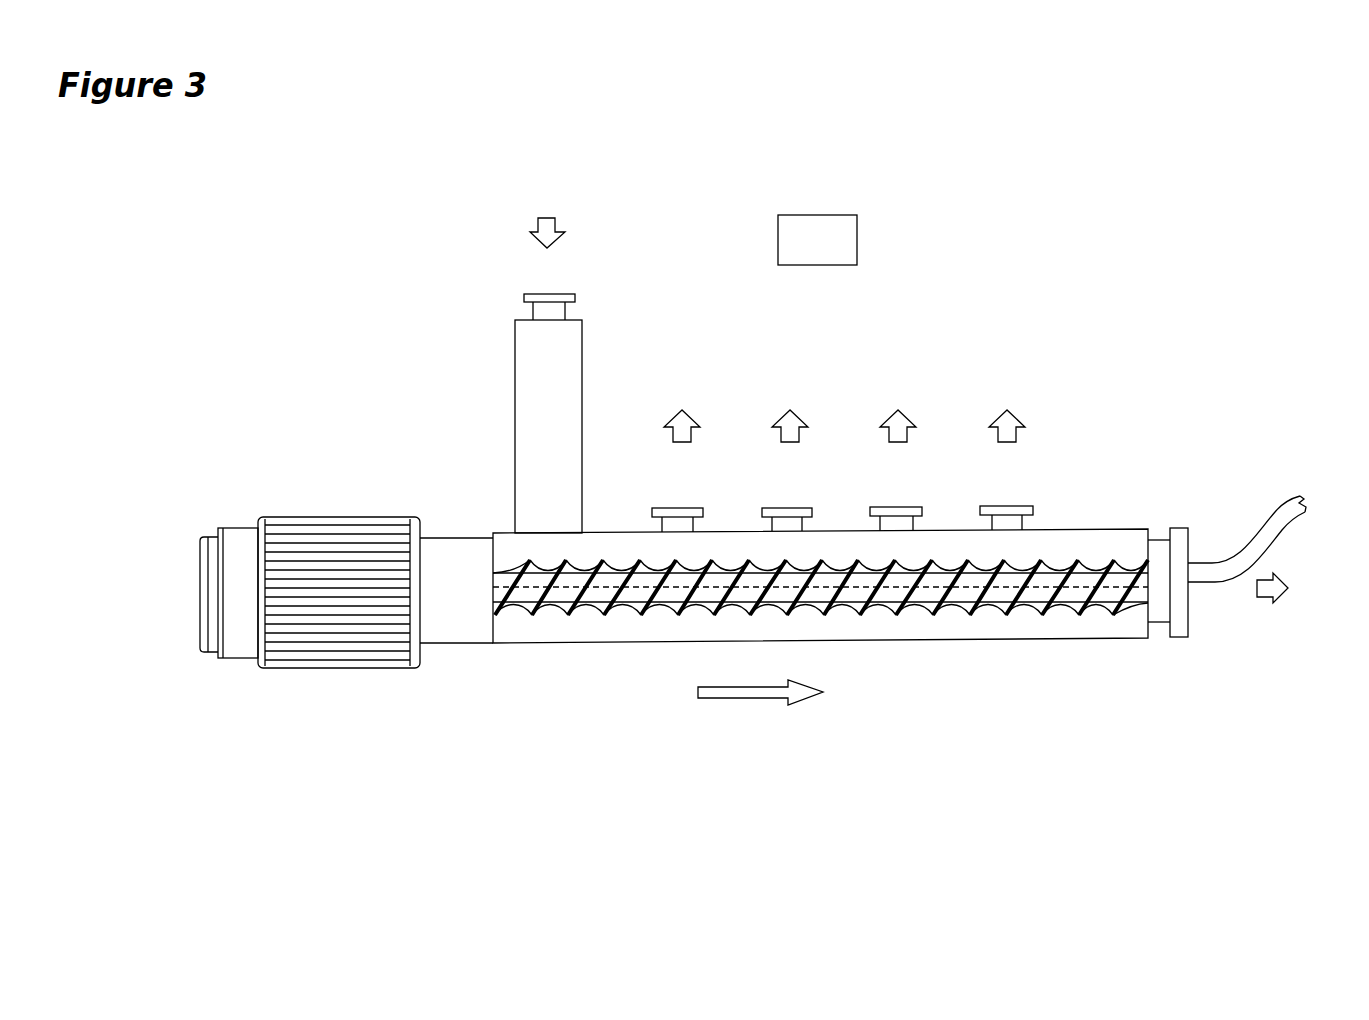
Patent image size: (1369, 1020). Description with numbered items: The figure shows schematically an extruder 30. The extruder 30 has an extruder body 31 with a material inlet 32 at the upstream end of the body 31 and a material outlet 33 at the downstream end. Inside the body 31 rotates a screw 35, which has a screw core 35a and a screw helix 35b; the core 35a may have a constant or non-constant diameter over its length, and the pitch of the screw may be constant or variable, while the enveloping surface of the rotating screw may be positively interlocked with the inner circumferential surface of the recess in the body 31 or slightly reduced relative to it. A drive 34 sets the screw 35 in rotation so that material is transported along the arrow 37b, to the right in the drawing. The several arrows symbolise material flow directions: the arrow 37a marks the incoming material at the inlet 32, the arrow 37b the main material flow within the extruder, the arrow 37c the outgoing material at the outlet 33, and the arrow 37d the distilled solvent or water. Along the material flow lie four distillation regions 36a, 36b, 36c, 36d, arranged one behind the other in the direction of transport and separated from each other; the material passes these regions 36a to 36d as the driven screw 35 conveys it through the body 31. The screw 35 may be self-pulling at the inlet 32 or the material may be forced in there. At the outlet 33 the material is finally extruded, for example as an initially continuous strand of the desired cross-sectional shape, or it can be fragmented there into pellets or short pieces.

The extruder 30 is at (817, 240).
The extruder body 31 is at (529, 646).
The material inlet 32 is at (521, 413).
The material outlet 33 is at (1182, 525).
The drive 34 is at (346, 576).
The screw 35 is at (820, 682).
The screw core 35a is at (559, 600).
The screw helix 35b is at (934, 620).
The distillation region 36a is at (675, 500).
The distillation region 36b is at (784, 499).
The distillation region 36c is at (896, 499).
The distillation region 36d is at (1006, 499).
The arrow 37a is at (545, 212).
The arrow 37b is at (742, 700).
The arrow 37c is at (1300, 598).
The arrow 37d is at (869, 411).